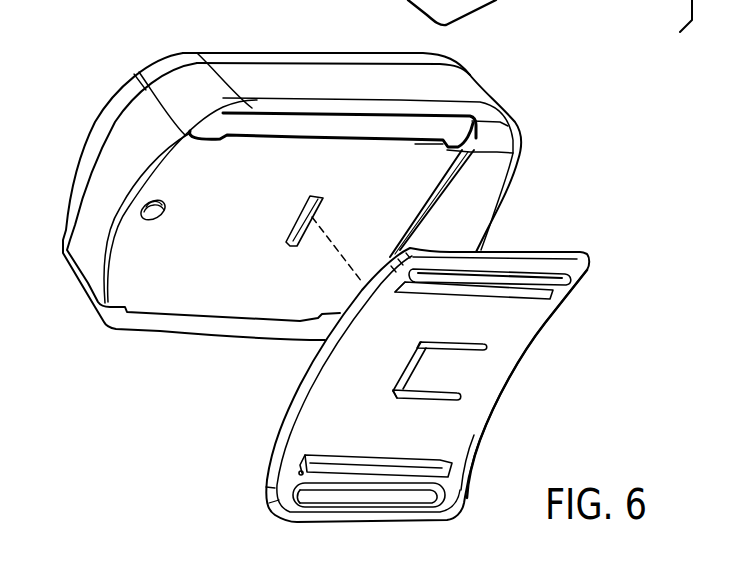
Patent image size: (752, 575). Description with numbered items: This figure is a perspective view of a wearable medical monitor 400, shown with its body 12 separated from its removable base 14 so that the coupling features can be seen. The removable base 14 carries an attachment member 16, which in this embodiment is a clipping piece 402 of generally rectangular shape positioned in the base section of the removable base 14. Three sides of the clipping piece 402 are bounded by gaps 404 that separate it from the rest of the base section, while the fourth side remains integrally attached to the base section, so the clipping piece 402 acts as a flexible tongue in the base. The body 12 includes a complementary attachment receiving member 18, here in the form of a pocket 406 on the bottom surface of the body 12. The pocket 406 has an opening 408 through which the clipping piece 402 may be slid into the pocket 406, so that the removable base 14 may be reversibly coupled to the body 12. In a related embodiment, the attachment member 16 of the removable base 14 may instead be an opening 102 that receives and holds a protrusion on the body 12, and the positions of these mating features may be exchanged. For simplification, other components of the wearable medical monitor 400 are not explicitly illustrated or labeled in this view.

The wearable medical monitor 400 is at (377, 261).
The body 12 is at (521, 153).
The removable base 14 is at (589, 262).
The attachment member 16 is at (453, 373).
The attachment receiving member 18 is at (307, 200).
The opening 102 is at (535, 317).
The clipping piece 402 is at (438, 397).
The gaps 404 is at (400, 392).
The pocket 406 is at (307, 200).
The opening 408 is at (309, 200).